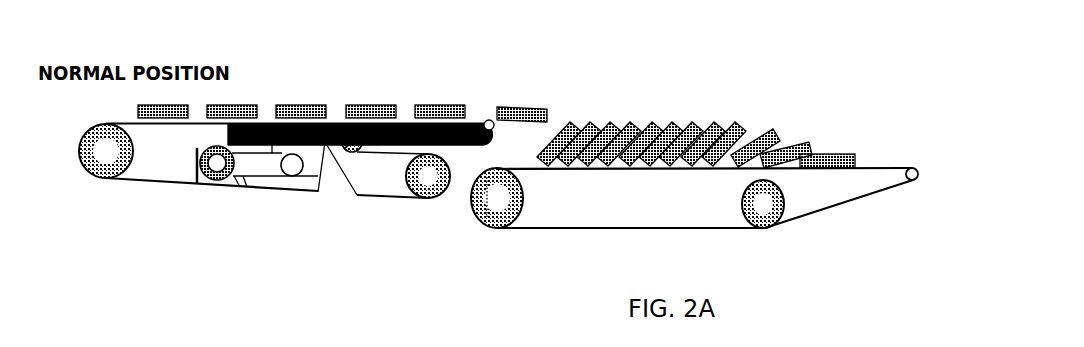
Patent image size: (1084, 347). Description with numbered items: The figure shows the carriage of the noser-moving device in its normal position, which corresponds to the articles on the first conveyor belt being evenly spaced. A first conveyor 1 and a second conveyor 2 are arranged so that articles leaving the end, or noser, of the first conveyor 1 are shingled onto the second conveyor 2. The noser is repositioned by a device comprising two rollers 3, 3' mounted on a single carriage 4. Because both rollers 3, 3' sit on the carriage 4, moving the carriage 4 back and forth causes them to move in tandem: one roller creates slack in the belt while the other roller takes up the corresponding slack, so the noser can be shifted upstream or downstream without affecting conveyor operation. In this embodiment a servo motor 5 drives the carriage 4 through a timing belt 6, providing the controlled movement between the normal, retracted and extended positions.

The first conveyor 1 is at (403, 118).
The second conveyor 2 is at (877, 167).
The roller 3 is at (392, 85).
The roller 3' is at (340, 215).
The carriage 4 is at (456, 148).
The servo motor 5 is at (211, 187).
The timing belt 6 is at (267, 178).